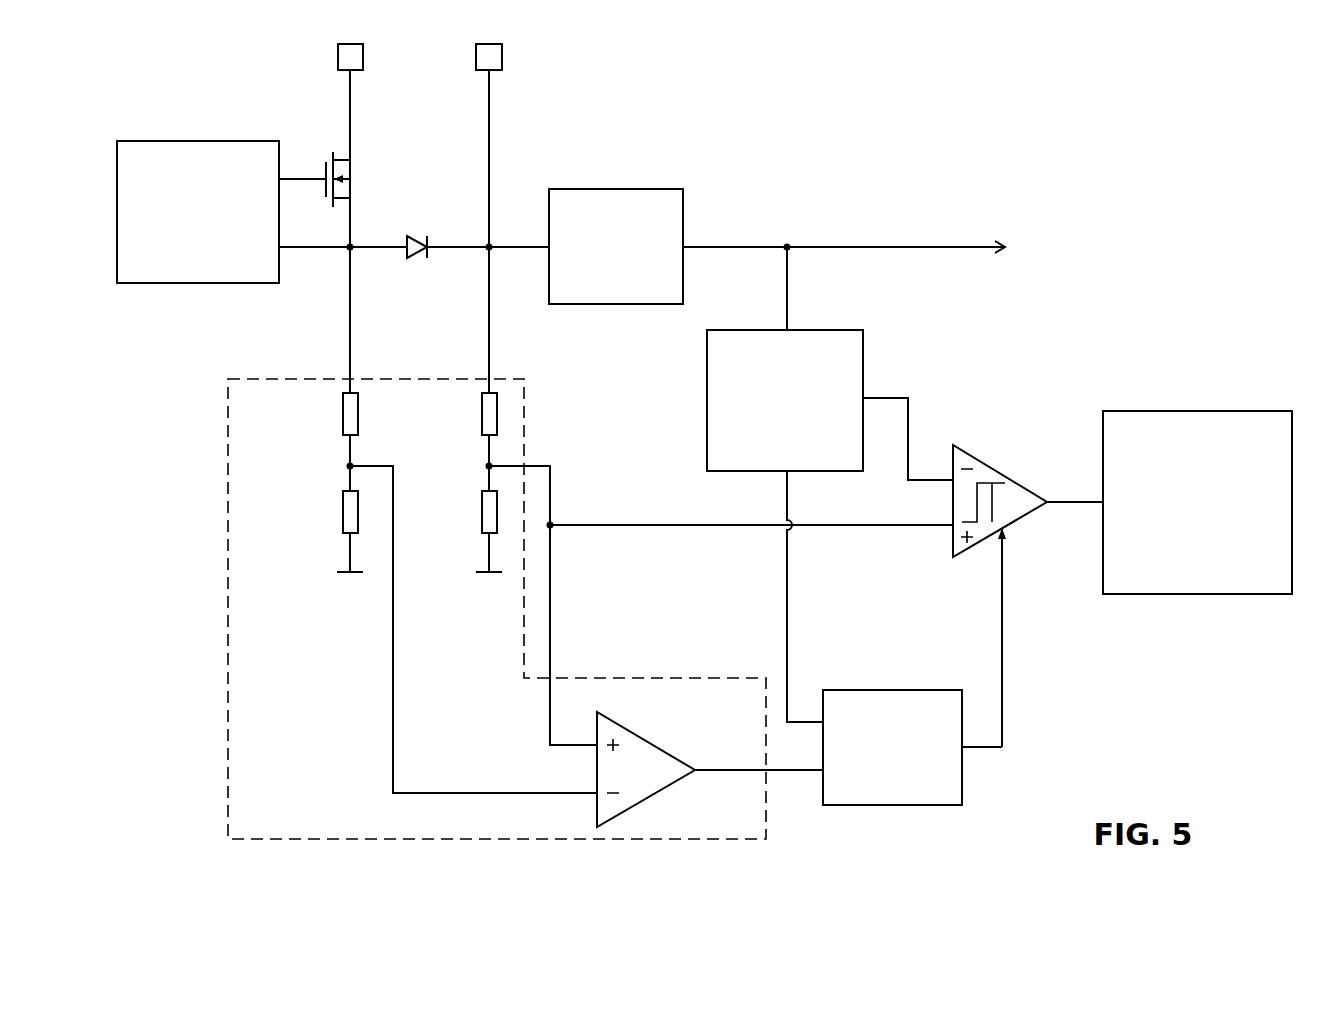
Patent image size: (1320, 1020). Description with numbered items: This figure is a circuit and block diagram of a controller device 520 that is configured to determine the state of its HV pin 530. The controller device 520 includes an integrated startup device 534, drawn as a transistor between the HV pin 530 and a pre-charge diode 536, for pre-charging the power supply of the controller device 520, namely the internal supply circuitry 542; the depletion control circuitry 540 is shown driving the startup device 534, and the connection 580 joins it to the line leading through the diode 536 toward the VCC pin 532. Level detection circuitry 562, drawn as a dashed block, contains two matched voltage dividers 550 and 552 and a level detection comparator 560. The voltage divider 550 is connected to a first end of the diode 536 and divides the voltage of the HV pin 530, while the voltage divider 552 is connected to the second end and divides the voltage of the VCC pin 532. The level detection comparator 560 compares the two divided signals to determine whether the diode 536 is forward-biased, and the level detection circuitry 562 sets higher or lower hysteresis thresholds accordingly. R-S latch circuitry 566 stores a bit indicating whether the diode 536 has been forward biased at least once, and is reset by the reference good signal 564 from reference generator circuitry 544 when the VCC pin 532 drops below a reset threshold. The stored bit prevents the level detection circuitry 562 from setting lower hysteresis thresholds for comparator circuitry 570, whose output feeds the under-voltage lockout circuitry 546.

The controller device 520 is at (1085, 104).
The HV pin 530 is at (338, 72).
The VCC pin 532 is at (502, 72).
The startup device 534 is at (375, 166).
The pre-charge diode 536 is at (415, 278).
The depletion control circuitry 540 is at (182, 257).
The internal supply circuitry 542 is at (600, 292).
The reference generator circuitry 544 is at (769, 446).
The under-voltage lockout (UVLO) circuitry 546 is at (1181, 572).
The voltage divider 550 is at (386, 435).
The voltage divider 552 is at (451, 550).
The level detection comparator 560 is at (539, 764).
The level detection circuitry 562 is at (275, 827).
The reference good signal 564 is at (755, 654).
The R-S latch circuitry 566 is at (876, 792).
The comparator circuitry 570 is at (942, 573).
The node 580 is at (320, 286).